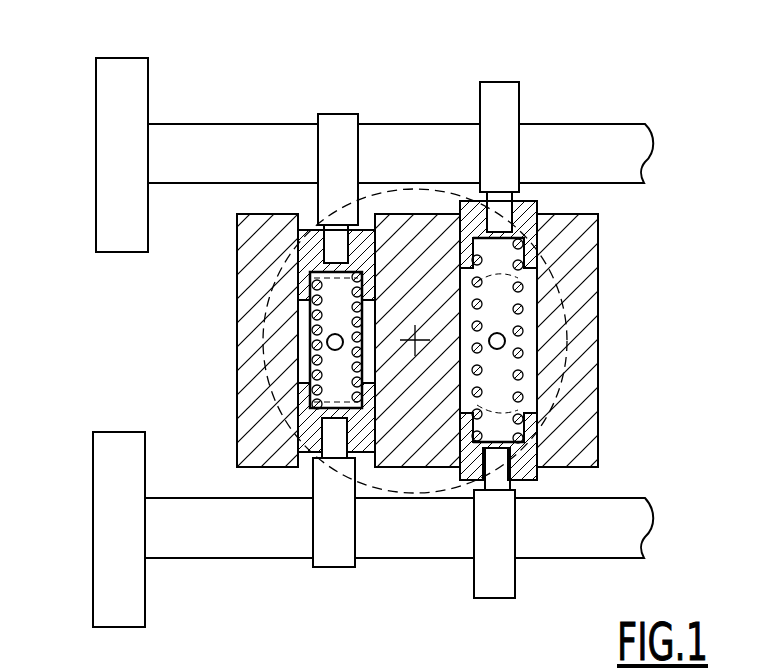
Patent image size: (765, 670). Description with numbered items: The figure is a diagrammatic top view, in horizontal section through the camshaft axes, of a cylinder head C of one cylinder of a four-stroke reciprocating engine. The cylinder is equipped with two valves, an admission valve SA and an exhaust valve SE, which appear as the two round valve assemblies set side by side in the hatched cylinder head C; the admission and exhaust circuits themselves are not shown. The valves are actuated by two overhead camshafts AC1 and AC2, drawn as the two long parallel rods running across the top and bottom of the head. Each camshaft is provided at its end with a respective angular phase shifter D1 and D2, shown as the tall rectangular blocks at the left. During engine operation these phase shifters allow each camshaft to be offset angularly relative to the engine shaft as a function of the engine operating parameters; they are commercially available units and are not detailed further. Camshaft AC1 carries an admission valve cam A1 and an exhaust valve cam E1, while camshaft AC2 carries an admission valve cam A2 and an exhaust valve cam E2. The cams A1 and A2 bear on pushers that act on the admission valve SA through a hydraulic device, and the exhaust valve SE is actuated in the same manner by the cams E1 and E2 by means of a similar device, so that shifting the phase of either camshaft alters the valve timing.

The angular phase shifter D2 is at (115, 166).
The overhead camshaft AC2 is at (400, 153).
The admission valve cam A2 is at (341, 122).
The exhaust valve cam E2 is at (503, 88).
The angular phase shifter D1 is at (110, 540).
The overhead camshaft AC1 is at (399, 528).
The admission valve cam A1 is at (336, 562).
The exhaust valve cam E1 is at (497, 594).
The admission valve SA is at (275, 303).
The exhaust valve SE is at (566, 309).
The cylinder head C is at (228, 397).